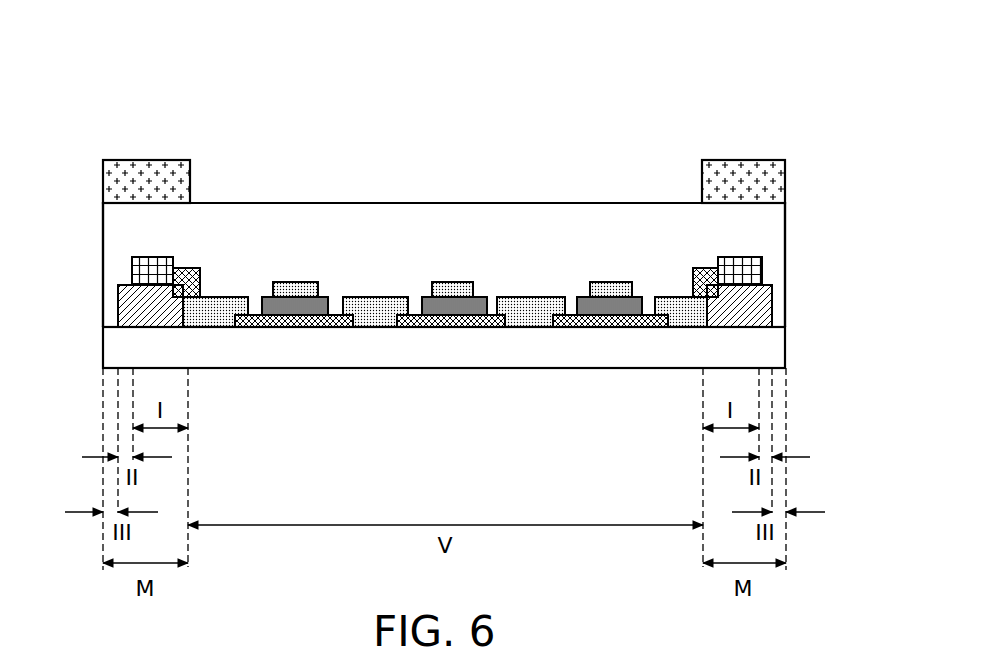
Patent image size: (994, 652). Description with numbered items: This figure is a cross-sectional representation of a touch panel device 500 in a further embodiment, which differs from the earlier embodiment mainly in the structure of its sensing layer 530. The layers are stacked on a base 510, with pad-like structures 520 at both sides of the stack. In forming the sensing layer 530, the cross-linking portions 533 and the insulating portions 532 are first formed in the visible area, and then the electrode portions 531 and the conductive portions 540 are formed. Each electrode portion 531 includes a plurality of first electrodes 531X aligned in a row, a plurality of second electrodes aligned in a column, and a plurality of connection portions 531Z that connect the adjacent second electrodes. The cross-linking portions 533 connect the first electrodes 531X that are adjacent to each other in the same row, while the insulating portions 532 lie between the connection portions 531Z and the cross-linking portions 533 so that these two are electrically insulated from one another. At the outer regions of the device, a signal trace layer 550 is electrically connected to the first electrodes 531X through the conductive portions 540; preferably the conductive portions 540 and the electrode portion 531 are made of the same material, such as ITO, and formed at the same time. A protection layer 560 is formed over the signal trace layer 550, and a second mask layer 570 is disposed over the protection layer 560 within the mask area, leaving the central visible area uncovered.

The touch panel device 500 is at (737, 116).
The substrate 510 is at (518, 352).
The pad electrode 520 is at (118, 313).
The sensing layer 530 is at (451, 184).
The electrode portion 531 is at (332, 215).
The connection portion 531Z is at (310, 221).
The first electrode 531X is at (390, 297).
The insulating portion 532 is at (480, 287).
The cross-linking portion 533 is at (607, 215).
The conductive portion 540 is at (203, 272).
The signal trace layer 550 is at (152, 262).
The protection layer 560 is at (650, 213).
The second mask layer 570 is at (100, 172).